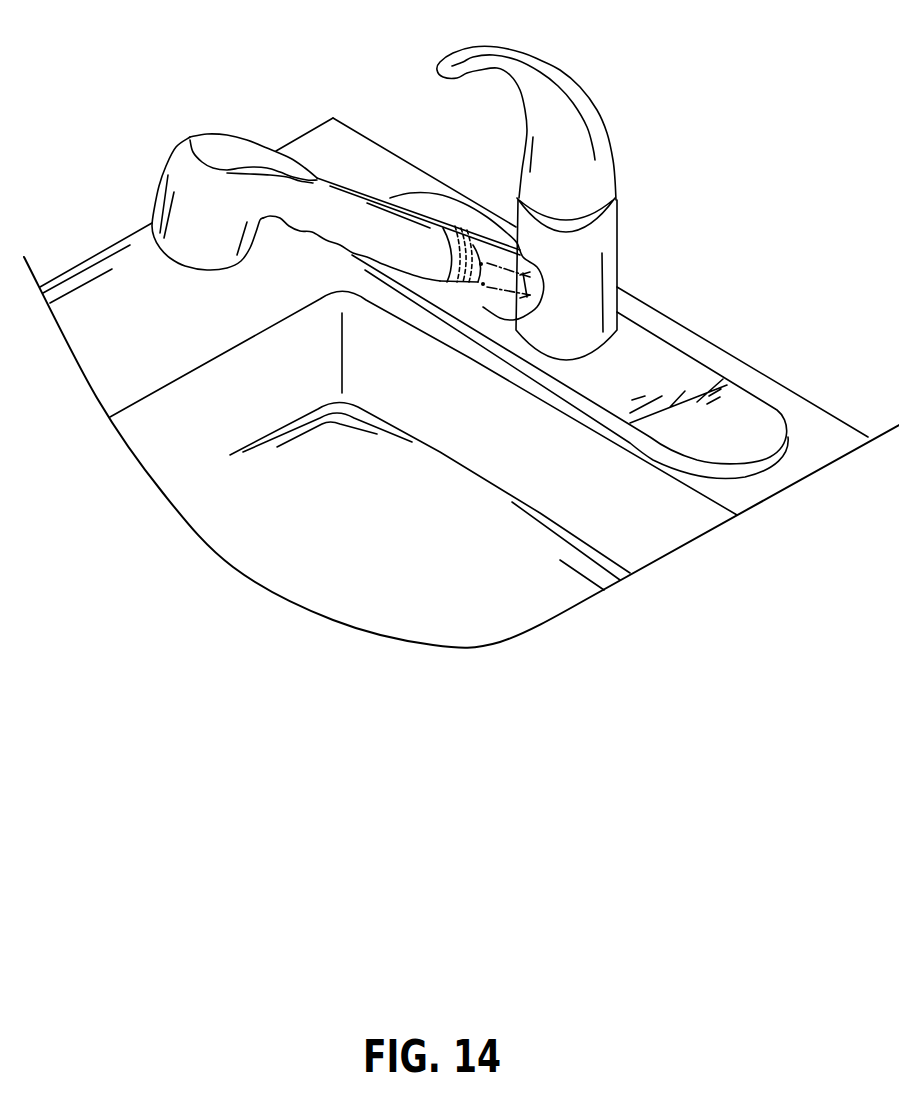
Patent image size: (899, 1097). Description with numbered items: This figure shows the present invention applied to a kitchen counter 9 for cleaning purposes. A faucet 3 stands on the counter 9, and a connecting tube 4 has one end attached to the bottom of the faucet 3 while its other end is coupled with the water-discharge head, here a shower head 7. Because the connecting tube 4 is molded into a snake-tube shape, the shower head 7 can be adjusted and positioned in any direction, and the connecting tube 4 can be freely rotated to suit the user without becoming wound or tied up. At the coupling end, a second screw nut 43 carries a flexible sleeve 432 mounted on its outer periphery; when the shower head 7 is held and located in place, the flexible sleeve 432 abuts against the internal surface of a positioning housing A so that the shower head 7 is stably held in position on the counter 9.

The faucet 3 is at (599, 82).
The shower head 7 is at (204, 290).
The connecting tube 4 is at (483, 292).
The second screw nut 43 is at (448, 290).
The flexible sleeve 432 is at (461, 242).
The positioning housing A is at (498, 318).
The kitchen counter 9 is at (602, 651).